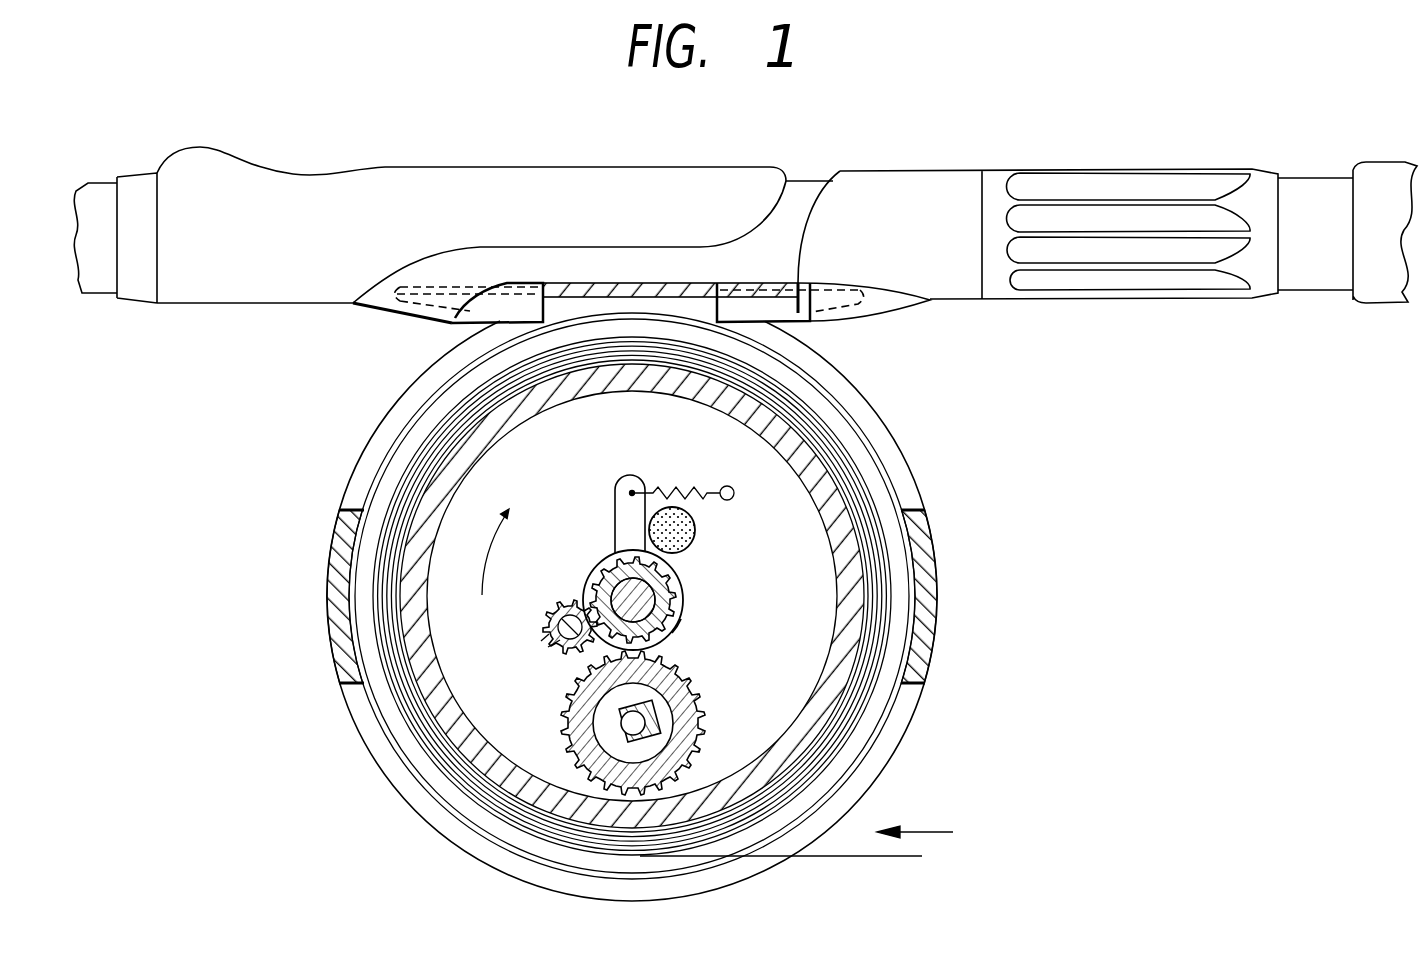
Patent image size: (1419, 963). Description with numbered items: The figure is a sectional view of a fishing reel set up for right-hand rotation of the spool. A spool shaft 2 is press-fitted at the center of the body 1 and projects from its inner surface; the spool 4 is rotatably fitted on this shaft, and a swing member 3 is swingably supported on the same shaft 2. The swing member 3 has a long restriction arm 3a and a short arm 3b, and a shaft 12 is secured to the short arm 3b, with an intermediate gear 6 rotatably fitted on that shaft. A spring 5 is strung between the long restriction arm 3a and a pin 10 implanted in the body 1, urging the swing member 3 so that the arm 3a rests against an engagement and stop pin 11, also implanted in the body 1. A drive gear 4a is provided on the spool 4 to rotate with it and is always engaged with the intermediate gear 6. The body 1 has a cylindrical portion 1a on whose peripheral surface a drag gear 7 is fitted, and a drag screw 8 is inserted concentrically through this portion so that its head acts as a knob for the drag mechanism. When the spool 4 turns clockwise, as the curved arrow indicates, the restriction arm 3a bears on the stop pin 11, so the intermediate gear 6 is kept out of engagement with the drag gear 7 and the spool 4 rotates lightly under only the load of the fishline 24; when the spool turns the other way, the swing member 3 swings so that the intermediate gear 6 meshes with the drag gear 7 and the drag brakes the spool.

The body 1 is at (341, 521).
The cylindrical portion 1a is at (603, 731).
The spool shaft 2 is at (681, 607).
The swing member 3 is at (690, 592).
The long restriction arm 3a is at (632, 476).
The short arm 3b is at (548, 647).
The spool 4 is at (852, 509).
The drive gear 4a is at (681, 619).
The spring 5 is at (700, 484).
The intermediate gear 6 is at (540, 624).
The drag gear 7 is at (706, 721).
The drag screw 8 is at (593, 750).
The pin 10 is at (740, 491).
The engagement and stop pin 11 is at (697, 534).
The shaft 12 is at (541, 641).
The fishline 24 is at (916, 858).